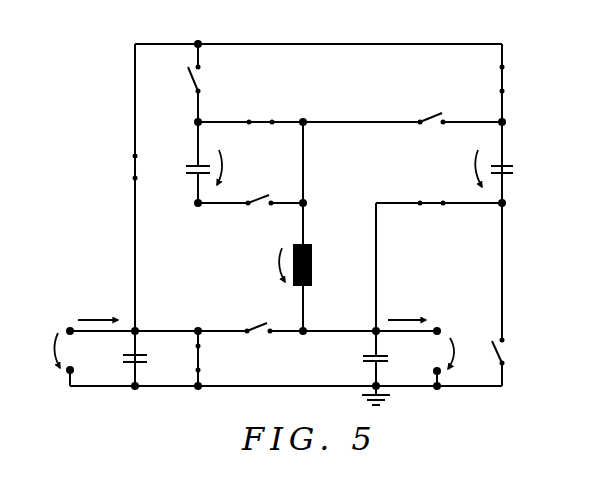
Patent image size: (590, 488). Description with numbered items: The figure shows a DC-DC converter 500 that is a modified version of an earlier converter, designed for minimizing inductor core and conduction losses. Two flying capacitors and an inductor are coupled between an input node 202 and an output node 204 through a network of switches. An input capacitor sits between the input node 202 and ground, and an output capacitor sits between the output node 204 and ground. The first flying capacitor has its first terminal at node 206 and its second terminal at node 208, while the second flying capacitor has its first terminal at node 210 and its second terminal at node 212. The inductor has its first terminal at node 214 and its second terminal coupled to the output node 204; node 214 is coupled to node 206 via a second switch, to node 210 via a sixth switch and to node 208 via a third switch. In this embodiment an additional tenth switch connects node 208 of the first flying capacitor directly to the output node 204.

The DC-DC converter 500 is at (74, 89).
The input node 202 is at (133, 328).
The output node 204 is at (373, 330).
The node 206 is at (197, 121).
The node 208 is at (197, 202).
The node 210 is at (504, 121).
The node 212 is at (504, 202).
The node 214 is at (306, 200).